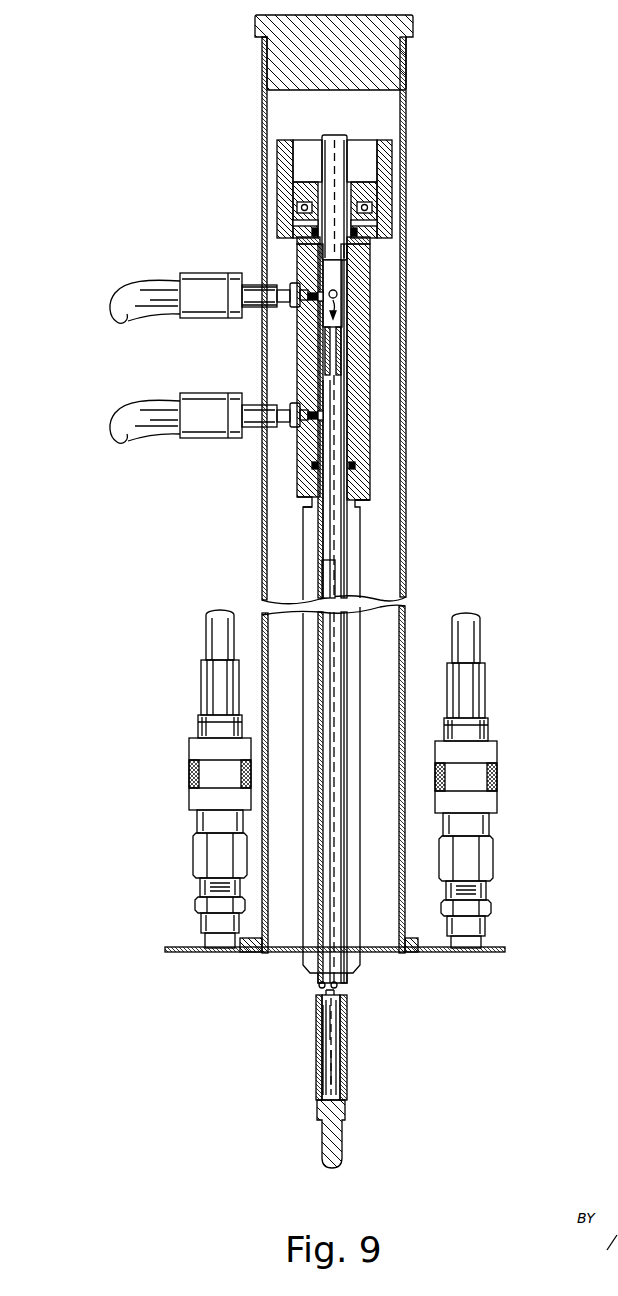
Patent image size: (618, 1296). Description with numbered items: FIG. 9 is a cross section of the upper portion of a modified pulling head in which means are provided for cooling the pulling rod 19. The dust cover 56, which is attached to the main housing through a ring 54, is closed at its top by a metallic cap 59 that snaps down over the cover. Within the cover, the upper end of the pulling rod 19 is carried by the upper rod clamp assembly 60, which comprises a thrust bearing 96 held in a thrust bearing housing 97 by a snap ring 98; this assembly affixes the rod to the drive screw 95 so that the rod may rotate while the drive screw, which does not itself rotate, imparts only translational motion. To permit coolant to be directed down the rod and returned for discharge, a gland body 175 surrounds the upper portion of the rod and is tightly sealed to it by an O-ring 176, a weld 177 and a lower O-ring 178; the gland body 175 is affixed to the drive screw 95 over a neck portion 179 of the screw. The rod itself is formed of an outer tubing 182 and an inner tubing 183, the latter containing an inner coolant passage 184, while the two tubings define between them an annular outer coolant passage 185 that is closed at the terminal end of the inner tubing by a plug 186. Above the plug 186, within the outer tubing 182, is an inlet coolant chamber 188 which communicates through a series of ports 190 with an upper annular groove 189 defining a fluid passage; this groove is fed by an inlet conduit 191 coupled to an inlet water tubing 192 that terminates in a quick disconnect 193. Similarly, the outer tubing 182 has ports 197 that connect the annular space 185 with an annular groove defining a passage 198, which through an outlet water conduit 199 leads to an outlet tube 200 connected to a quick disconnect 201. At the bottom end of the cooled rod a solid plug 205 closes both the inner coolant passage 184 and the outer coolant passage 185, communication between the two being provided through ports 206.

The metallic cap 59 is at (392, 25).
The pulling rod 19 is at (333, 145).
The upper rod clamp assembly 60 is at (405, 171).
The thrust bearing housing 97 is at (280, 195).
The thrust bearing 96 is at (378, 212).
The snap ring 98 is at (388, 226).
The O-ring 176 is at (292, 227).
The weld 177 is at (298, 253).
The ports 190 is at (330, 275).
The upper annular groove 189 is at (340, 287).
The dust cover 56 is at (404, 325).
The plug 186 is at (370, 340).
The gland body 175 is at (362, 375).
The outer tubing 182 is at (348, 385).
The annular outer coolant passage 185 is at (345, 445).
The inner coolant passage 184 is at (347, 460).
The lower O-ring 178 is at (355, 465).
The inner tubing 183 is at (350, 478).
The neck portion 179 is at (362, 502).
The drive screw 95 is at (303, 525).
The inlet water tubing 192 is at (148, 292).
The inlet conduit 191 is at (262, 300).
The inlet coolant chamber 188 is at (323, 322).
The outlet tube 200 is at (140, 410).
The passage 198 is at (310, 410).
The outlet water conduit 199 is at (300, 428).
The ports 197 is at (305, 435).
The quick disconnect 193 is at (212, 777).
The quick disconnect 201 is at (500, 760).
The ring 54 is at (406, 953).
The ports 206 is at (325, 1075).
The solid plug 205 is at (330, 1130).